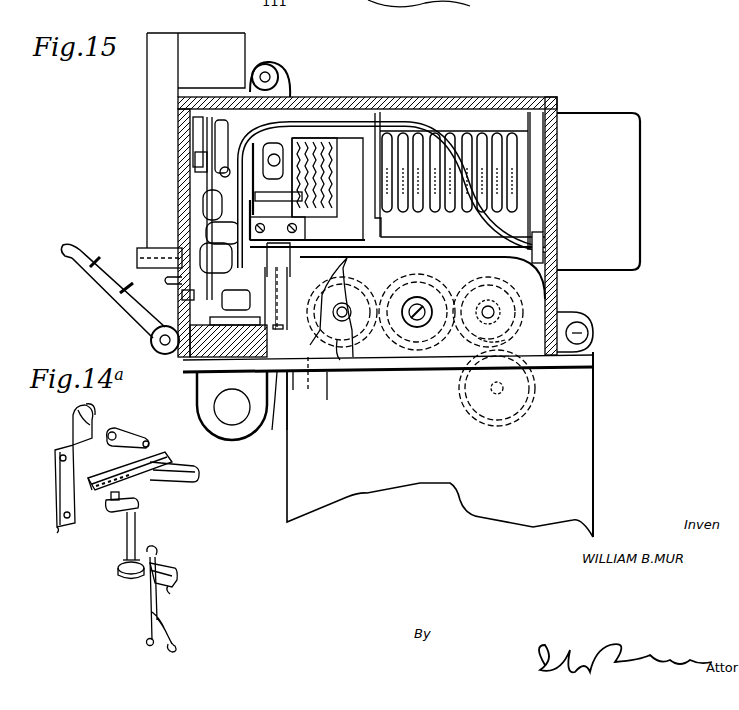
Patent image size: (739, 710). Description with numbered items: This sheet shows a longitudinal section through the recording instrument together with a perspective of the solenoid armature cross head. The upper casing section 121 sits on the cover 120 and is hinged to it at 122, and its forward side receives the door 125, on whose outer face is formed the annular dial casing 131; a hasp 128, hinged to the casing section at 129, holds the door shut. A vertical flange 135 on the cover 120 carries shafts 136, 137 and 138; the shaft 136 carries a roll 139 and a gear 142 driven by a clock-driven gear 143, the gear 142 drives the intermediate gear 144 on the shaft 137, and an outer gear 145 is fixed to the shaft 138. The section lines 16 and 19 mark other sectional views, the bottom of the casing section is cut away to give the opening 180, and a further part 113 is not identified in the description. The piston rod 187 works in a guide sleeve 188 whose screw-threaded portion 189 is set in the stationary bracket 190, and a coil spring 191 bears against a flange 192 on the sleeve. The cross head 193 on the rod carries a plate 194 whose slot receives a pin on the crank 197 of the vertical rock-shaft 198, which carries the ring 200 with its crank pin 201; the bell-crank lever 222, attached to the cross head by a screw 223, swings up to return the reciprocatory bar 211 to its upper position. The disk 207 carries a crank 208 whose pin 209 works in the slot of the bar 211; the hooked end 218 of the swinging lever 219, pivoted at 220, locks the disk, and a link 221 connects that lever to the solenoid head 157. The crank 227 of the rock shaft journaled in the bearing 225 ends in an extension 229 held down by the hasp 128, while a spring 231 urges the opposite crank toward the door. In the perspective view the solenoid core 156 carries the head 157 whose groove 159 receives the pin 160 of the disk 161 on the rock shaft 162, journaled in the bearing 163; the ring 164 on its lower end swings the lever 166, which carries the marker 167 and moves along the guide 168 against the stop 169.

In FIG. 15, the annular flange or dial casing 131 is at (160, 61).
In FIG. 15, the pin 209 is at (242, 89).
In FIG. 15, the upper casing section 121 is at (450, 100).
In FIG. 15, the door 125 is at (180, 106).
In FIG. 15, the cover 120 is at (200, 368).
In FIG. 15, the casing wall 113 is at (598, 435).
In FIG. 15, the section line 16 is at (118, 190).
In FIG. 15, the section line 19 is at (127, 275).
In FIG. 15, the hasp 128 is at (80, 258).
In FIG. 15, the extension 229 is at (124, 289).
In FIG. 15, the hinge of hasp 129 is at (151, 341).
In FIG. 15, the crank 208 is at (193, 128).
In FIG. 15, the disk 207 is at (205, 150).
In FIG. 15, the spring 231 is at (195, 162).
In FIG. 15, the reciprocatory bar 211 is at (203, 182).
In FIG. 15, the pivot of swinging lever 220 is at (205, 195).
In FIG. 14A, the pivot of swinging lever 220 is at (58, 527).
In FIG. 15, the bell-crank lever 222 is at (206, 232).
In FIG. 15, the vertical stationary bearing 225 is at (182, 250).
In FIG. 15, the screw 223 is at (167, 281).
In FIG. 15, the crank 227 is at (183, 296).
In FIG. 15, the stationary bracket 190 is at (200, 306).
In FIG. 15, the hooked end 218 is at (238, 135).
In FIG. 14A, the hooked end 218 is at (70, 413).
In FIG. 15, the cross head 193 is at (275, 143).
In FIG. 15, the screw-threaded portion 189 is at (318, 138).
In FIG. 15, the plate 194 is at (307, 191).
In FIG. 15, the flange 192 is at (374, 219).
In FIG. 15, the compressible coil spring 191 is at (485, 135).
In FIG. 15, the guide sleeve 188 is at (403, 135).
In FIG. 15, the piston rod 187 is at (528, 160).
In FIG. 15, the roll 139 is at (547, 296).
In FIG. 15, the crank 197 is at (290, 262).
In FIG. 15, the ring 200 is at (318, 296).
In FIG. 15, the intermediate gear 144 is at (352, 322).
In FIG. 15, the vertical flange 135 is at (398, 290).
In FIG. 15, the shaft 137 is at (423, 322).
In FIG. 15, the shaft 136 is at (478, 305).
In FIG. 15, the gear 143 is at (512, 426).
In FIG. 15, the gear 142 is at (500, 337).
In FIG. 15, the hinge 122 is at (589, 334).
In FIG. 15, the shaft 138 is at (340, 360).
In FIG. 15, the outer gear 145 is at (327, 400).
In FIG. 15, the crank or pin 201 is at (308, 392).
In FIG. 15, the vertical rock-shaft 198 is at (274, 430).
In FIG. 15, the opening 180 is at (252, 408).
In FIG. 14A, the swinging lever 219 is at (92, 422).
In FIG. 14A, the link 221 is at (122, 437).
In FIG. 14A, the head 157 is at (165, 458).
In FIG. 14A, the reciprocatory core 156 is at (195, 467).
In FIG. 14A, the groove 159 is at (92, 480).
In FIG. 14A, the pin 160 is at (120, 496).
In FIG. 14A, the disk 161 is at (139, 505).
In FIG. 14A, the vertical rock shaft 162 is at (136, 525).
In FIG. 14A, the stationary bearing 163 is at (128, 560).
In FIG. 14A, the ring 164 is at (118, 569).
In FIG. 14A, the marker 167 is at (157, 552).
In FIG. 14A, the guide 168 is at (176, 572).
In FIG. 14A, the stop 169 is at (170, 592).
In FIG. 14A, the vertically swinging lever 166 is at (150, 596).